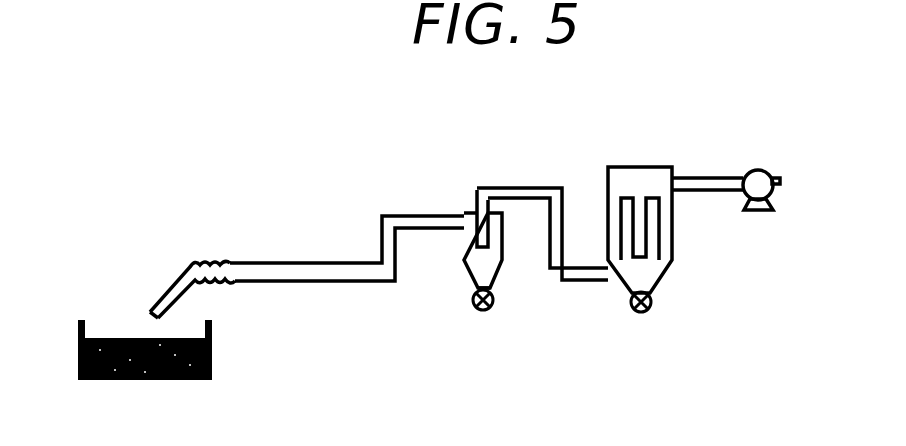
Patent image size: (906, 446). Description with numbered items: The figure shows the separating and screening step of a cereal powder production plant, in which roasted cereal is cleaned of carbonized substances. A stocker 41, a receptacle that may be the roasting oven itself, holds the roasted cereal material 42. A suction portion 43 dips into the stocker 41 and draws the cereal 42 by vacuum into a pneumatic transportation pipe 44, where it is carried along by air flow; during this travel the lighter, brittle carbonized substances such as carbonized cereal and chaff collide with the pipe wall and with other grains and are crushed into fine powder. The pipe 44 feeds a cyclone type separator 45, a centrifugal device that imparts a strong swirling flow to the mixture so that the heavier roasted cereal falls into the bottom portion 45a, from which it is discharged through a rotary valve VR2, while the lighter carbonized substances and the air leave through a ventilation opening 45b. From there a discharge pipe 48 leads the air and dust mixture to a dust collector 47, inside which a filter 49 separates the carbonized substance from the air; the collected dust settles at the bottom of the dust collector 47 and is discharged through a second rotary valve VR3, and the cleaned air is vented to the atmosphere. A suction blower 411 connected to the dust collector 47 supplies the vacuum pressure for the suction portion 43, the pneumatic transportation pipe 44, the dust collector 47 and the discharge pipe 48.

The stocker 41 is at (212, 352).
The cereal material 42 is at (113, 333).
The suction portion 43 is at (184, 275).
The pneumatic transportation pipe 44 is at (312, 268).
The cyclone type separator 45 is at (458, 270).
The bottom portion of the separator 45a is at (486, 277).
The ventilation opening 45b is at (482, 224).
The discharge pipe 48 is at (533, 187).
The dust collector 47 is at (673, 250).
The filter 49 is at (638, 197).
The suction blower 411 is at (753, 170).
The rotary valve VR2 is at (479, 312).
The rotary valve VR3 is at (650, 308).